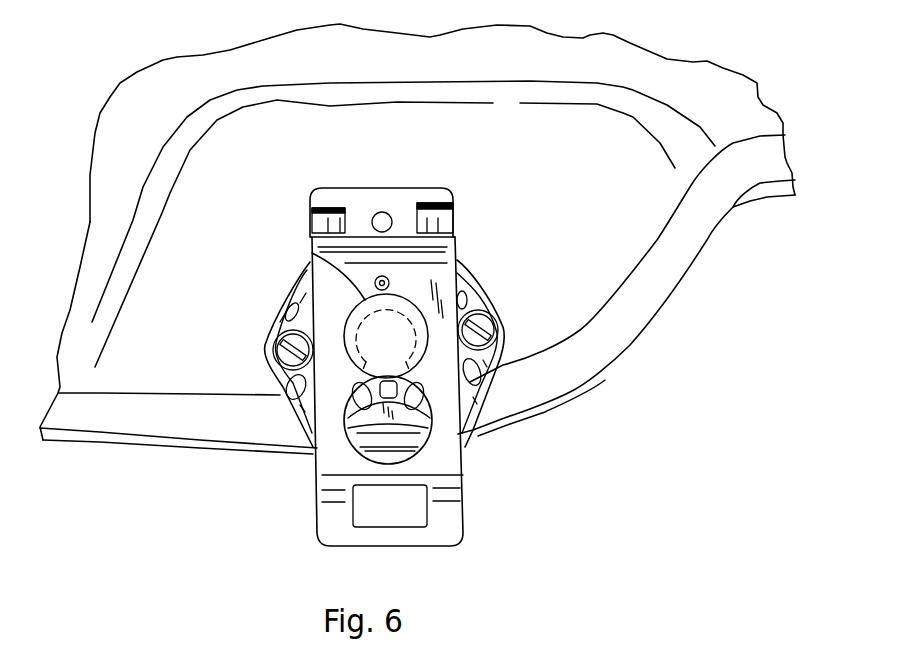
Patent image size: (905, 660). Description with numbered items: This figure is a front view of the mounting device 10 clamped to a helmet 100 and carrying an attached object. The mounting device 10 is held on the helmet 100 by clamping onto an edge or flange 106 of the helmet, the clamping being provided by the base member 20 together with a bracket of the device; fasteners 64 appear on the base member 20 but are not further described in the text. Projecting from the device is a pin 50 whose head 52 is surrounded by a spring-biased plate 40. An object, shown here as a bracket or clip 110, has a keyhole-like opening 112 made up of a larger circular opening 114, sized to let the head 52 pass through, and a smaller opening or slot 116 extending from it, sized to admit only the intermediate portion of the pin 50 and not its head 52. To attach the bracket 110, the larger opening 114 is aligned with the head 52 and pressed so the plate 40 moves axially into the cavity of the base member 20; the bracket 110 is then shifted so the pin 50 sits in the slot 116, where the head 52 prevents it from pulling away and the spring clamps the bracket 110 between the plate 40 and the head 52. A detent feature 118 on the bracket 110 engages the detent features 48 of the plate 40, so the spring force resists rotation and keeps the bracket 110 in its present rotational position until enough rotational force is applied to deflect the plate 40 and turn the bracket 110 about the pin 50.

The mounting device 10 is at (385, 361).
The base member 20 is at (466, 268).
The plate 40 is at (348, 420).
The detent features 48 is at (416, 401).
The pin 50 is at (398, 346).
The head 52 is at (350, 327).
The fastener screw 64 is at (276, 347).
The helmet 100 is at (608, 151).
The edge or flange 106 is at (614, 347).
The bracket or clip 110 is at (323, 548).
The opening 112 is at (344, 402).
The larger circular opening 114 is at (380, 212).
The smaller opening or slot 116 is at (352, 293).
The detent feature 118 is at (376, 283).